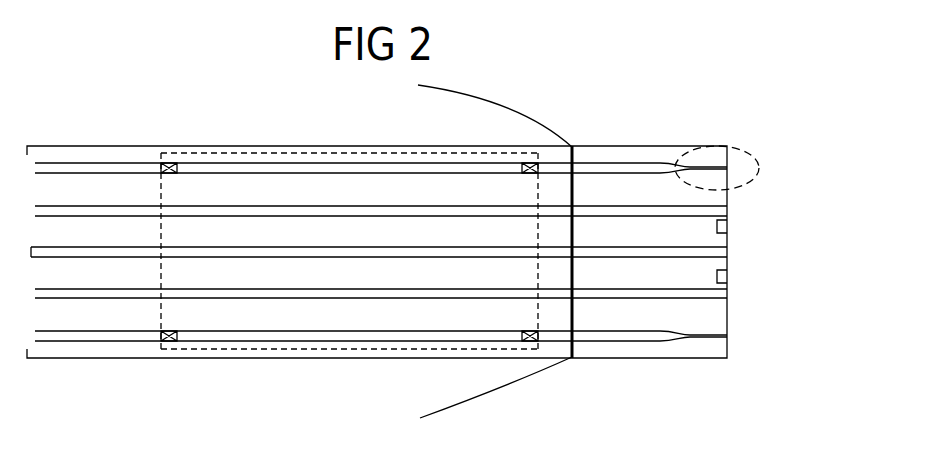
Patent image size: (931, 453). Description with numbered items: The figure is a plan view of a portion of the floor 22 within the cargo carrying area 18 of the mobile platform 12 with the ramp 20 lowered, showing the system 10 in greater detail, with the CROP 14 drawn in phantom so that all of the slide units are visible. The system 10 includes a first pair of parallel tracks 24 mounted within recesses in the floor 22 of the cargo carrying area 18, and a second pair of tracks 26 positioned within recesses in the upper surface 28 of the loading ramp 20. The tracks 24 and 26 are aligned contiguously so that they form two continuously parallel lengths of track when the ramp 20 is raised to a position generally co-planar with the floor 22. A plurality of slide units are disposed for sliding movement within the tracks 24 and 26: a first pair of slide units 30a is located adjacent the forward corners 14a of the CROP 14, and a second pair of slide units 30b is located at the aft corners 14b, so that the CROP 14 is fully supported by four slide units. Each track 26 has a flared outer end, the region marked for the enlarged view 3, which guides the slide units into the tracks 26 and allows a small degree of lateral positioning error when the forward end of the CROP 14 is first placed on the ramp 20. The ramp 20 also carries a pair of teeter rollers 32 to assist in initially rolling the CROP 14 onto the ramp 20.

The detail region of FIG. 3 is at (748, 152).
The system 10 is at (363, 130).
The mobile platform 12 is at (503, 102).
The CROP 14 is at (293, 349).
The forward corners 14a is at (163, 153).
The aft corners 14b is at (522, 153).
The cargo carrying area 18 is at (359, 393).
The ramp 20 is at (640, 146).
The floor 22 is at (99, 243).
The first pair of tracks 24 is at (330, 170).
The second pair of tracks 26 is at (608, 167).
The upper surface 28 is at (662, 187).
The first pair of slide units 30a is at (168, 168).
The second pair of slide units 30b is at (528, 173).
The teeter rollers 32 is at (717, 226).